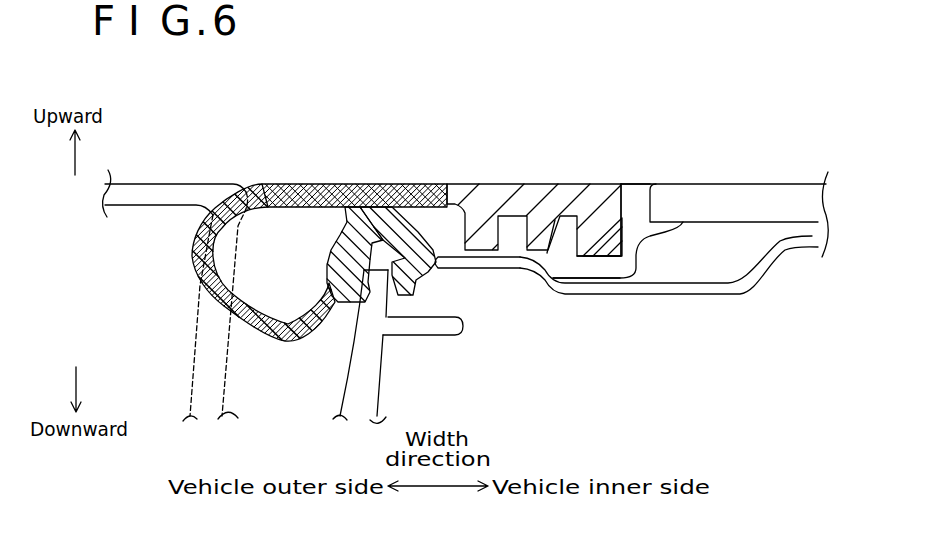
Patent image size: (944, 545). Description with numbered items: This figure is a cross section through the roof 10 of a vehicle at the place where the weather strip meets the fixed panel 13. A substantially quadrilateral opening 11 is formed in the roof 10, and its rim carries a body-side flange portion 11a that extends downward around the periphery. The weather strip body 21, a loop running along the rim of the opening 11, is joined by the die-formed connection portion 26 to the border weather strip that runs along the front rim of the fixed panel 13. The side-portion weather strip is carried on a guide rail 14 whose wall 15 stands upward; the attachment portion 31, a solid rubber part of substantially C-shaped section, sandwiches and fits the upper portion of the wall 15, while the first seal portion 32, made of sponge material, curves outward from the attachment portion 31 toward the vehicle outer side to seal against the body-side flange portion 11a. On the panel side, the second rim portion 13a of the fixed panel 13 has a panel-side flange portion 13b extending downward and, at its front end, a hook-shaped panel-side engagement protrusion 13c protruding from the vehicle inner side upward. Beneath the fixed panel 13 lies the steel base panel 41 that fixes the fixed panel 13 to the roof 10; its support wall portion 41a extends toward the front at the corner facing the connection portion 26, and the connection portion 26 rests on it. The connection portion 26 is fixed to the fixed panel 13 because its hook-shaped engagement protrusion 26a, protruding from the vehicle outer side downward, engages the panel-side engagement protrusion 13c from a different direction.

The roof 10 is at (153, 184).
The opening 11 is at (262, 217).
The body-side flange portion 11a is at (238, 418).
The fixed panel 13 is at (745, 184).
The second rim portion 13a is at (642, 184).
The panel-side flange portion 13b is at (600, 264).
The panel-side engagement protrusion 13c is at (547, 272).
The guide rail 14 is at (423, 326).
The wall 15 is at (381, 378).
The weather strip body 21 is at (348, 184).
The connection portion 26 is at (477, 184).
The engagement protrusion 26a is at (599, 184).
The attachment portion 31 is at (331, 270).
The first seal portion 32 is at (297, 184).
The base panel 41 is at (756, 298).
The support wall portion 41a is at (512, 270).